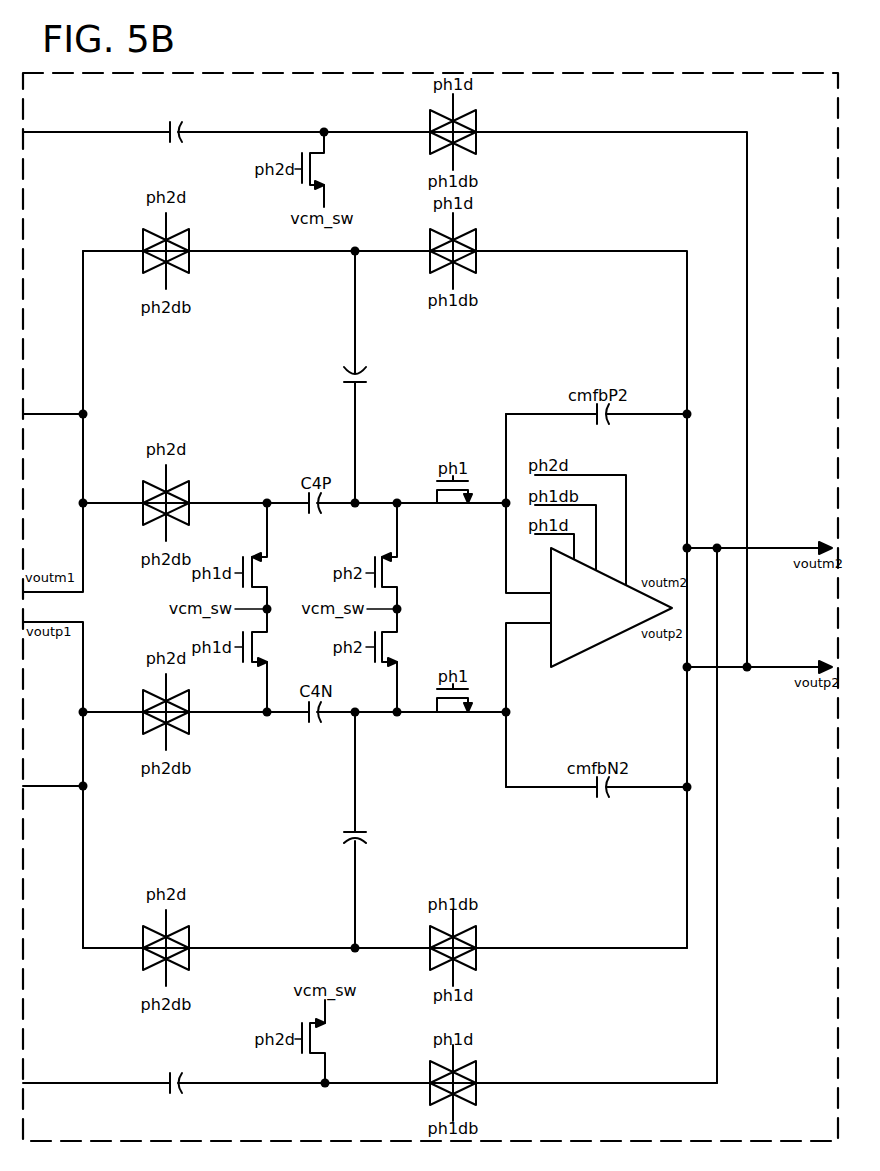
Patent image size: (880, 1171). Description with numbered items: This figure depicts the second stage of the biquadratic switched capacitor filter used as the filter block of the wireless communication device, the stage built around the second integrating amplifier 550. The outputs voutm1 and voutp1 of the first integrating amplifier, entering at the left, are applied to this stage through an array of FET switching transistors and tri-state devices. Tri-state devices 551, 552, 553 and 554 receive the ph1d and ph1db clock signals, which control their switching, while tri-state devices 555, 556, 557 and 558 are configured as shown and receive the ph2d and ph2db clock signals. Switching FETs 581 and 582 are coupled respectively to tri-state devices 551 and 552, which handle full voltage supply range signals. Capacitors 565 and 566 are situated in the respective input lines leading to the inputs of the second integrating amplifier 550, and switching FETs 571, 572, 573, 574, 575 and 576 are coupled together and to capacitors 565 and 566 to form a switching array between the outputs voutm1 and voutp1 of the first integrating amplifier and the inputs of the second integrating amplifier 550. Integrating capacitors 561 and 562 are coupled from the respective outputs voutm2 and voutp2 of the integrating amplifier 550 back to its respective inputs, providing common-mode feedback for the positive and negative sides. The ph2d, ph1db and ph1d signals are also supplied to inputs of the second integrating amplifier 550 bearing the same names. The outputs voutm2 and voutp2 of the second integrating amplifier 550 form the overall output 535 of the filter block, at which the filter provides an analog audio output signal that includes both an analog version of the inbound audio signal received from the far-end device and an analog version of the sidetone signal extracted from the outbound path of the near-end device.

The filter output 535 is at (767, 665).
The second integrating amplifier 550 is at (628, 585).
The tri-state device 551 is at (477, 120).
The tri-state device 552 is at (477, 239).
The tri-state device 553 is at (477, 936).
The tri-state device 554 is at (477, 1071).
The tri-state device 555 is at (190, 239).
The tri-state device 556 is at (190, 490).
The tri-state device 557 is at (187, 725).
The tri-state device 558 is at (190, 935).
The integrating capacitor 561 is at (612, 420).
The integrating capacitor 562 is at (612, 793).
The capacitor 565 is at (323, 512).
The capacitor 566 is at (323, 721).
The switching FET 571 is at (452, 500).
The switching FET 572 is at (452, 708).
The switching FET 573 is at (400, 570).
The switching FET 574 is at (400, 647).
The switching FET 575 is at (268, 570).
The switching FET 576 is at (268, 647).
The switching FET 581 is at (312, 168).
The switching FET 582 is at (312, 1038).